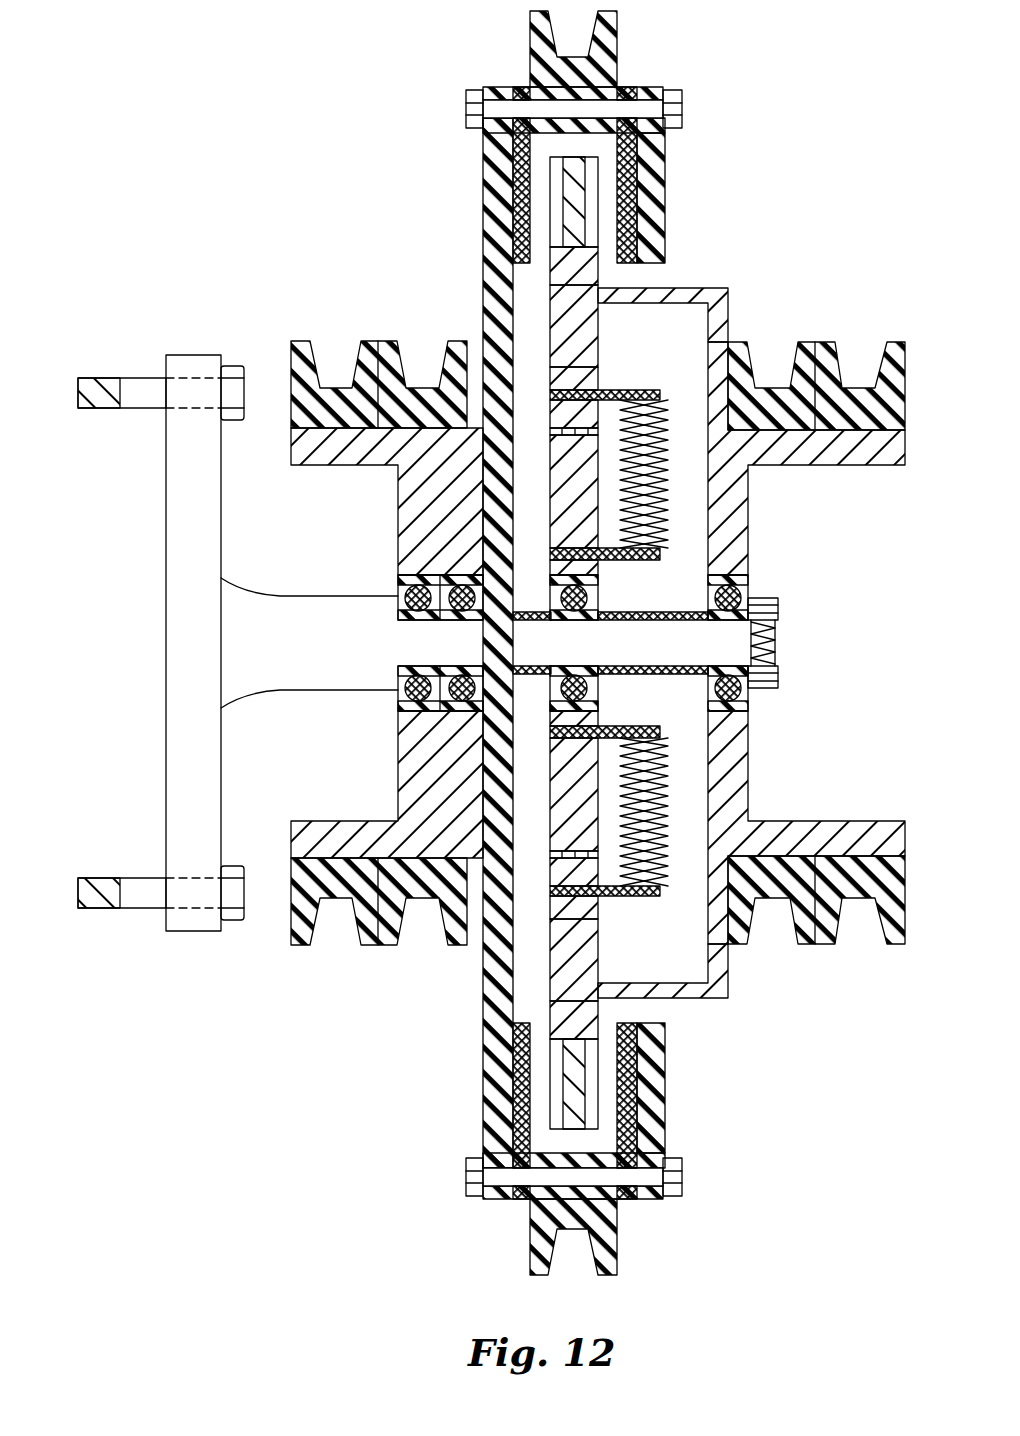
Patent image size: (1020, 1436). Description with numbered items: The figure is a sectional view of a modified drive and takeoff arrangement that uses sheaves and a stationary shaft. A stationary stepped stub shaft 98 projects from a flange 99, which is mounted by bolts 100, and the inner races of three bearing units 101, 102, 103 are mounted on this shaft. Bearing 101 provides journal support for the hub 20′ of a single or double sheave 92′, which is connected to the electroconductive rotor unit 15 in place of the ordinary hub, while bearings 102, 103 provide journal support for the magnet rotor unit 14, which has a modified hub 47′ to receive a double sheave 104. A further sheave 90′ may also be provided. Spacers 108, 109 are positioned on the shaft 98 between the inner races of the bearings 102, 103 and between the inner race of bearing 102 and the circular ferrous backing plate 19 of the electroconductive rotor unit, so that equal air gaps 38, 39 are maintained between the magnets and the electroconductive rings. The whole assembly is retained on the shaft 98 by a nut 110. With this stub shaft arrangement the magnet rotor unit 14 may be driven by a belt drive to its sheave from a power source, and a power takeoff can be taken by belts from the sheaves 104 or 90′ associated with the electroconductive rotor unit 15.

The magnet rotor unit 14 is at (702, 280).
The electroconductive rotor unit 15 is at (392, 207).
The circular ferrous backing plate 19 is at (483, 262).
The hub 20′ is at (415, 500).
The air gap 38 is at (645, 182).
The air gap 39 is at (540, 190).
The modified hub 47′ is at (835, 455).
The sheave 90′ is at (615, 40).
The single or double sheave 92′ is at (316, 346).
The stationary stepped stub shaft 98 is at (275, 596).
The flange 99 is at (175, 696).
The bolts 100 is at (140, 378).
The bearing unit 101 is at (400, 605).
The bearing unit 102 is at (600, 590).
The bearing unit 103 is at (742, 595).
The double sheave 104 is at (798, 344).
The spacer 108 is at (528, 665).
The spacer 109 is at (640, 675).
The nut 110 is at (775, 680).